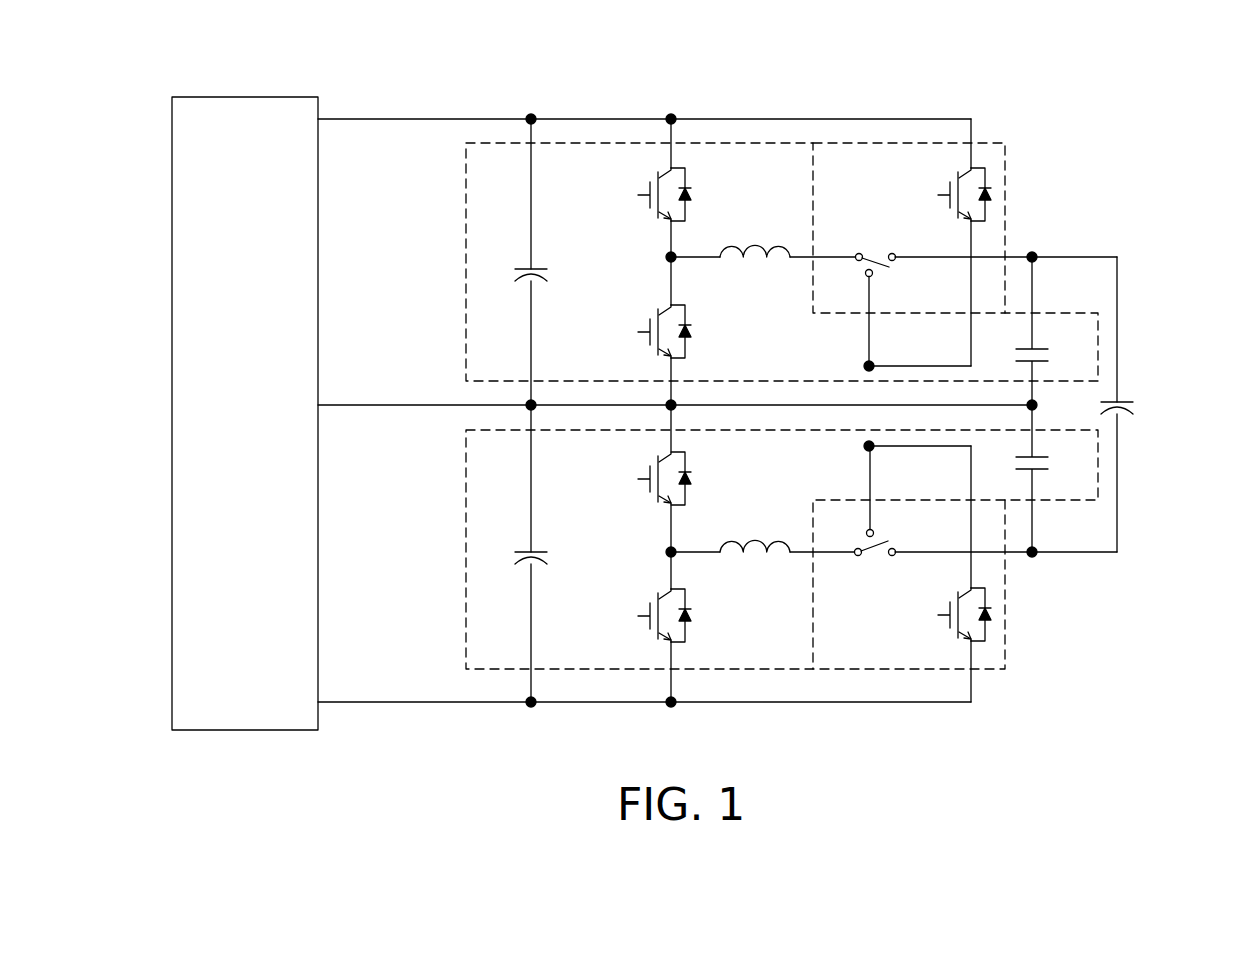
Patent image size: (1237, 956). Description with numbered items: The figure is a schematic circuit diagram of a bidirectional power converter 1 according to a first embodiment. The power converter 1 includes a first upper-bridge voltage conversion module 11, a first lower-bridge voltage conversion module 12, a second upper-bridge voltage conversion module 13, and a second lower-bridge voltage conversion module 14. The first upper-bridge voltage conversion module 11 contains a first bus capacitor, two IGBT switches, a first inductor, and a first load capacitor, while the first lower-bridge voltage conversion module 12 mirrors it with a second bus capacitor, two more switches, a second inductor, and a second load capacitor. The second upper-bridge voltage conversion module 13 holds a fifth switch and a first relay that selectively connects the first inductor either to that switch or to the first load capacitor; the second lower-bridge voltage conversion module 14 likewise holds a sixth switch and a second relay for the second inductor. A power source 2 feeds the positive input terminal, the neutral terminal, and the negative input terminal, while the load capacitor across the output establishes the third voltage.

The power converter 1 is at (1232, 92).
The power source 2 is at (246, 97).
The first upper-bridge voltage conversion module 11 is at (466, 185).
The first lower-bridge voltage conversion module 12 is at (466, 475).
The second upper-bridge voltage conversion module 13 is at (1006, 188).
The second lower-bridge voltage conversion module 14 is at (1006, 625).